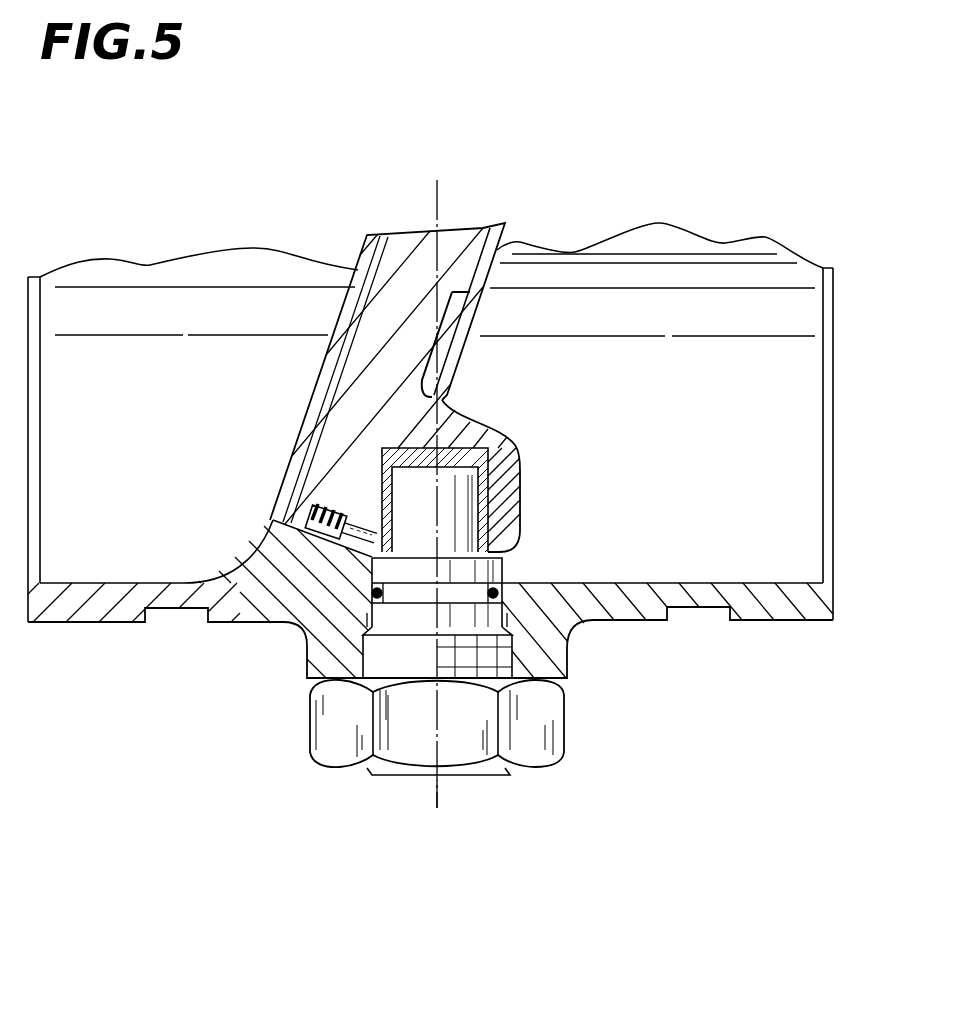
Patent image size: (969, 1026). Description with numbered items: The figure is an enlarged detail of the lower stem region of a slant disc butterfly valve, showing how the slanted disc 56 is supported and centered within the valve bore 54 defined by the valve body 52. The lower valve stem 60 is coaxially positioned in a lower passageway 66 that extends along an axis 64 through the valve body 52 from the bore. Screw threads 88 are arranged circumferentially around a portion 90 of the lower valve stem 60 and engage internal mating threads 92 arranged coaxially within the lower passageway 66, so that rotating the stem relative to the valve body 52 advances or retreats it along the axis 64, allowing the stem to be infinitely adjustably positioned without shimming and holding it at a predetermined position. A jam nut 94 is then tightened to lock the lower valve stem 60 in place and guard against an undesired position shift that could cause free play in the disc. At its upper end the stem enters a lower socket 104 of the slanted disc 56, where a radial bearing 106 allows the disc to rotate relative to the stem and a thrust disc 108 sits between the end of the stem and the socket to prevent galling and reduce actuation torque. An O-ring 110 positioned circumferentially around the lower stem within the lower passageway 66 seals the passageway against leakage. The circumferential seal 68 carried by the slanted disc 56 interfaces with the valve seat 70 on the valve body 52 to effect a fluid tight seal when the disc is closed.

The valve body 52 is at (820, 610).
The valve bore 54 is at (750, 389).
The slanted disc 56 is at (355, 386).
The lower valve stem 60 is at (462, 513).
The axis 64 is at (437, 805).
The lower passageway 66 is at (545, 640).
The circumferential seal 68 is at (268, 575).
The valve seat 70 is at (300, 515).
The screw threads 88 is at (562, 697).
The portion of the lower valve stem 90 is at (342, 652).
The internal mating threads 92 is at (548, 662).
The jam nut 94 is at (545, 755).
The lower socket 104 is at (520, 448).
The radial bearing 106 is at (520, 523).
The thrust disc 108 is at (453, 448).
The O-ring 110 is at (500, 593).